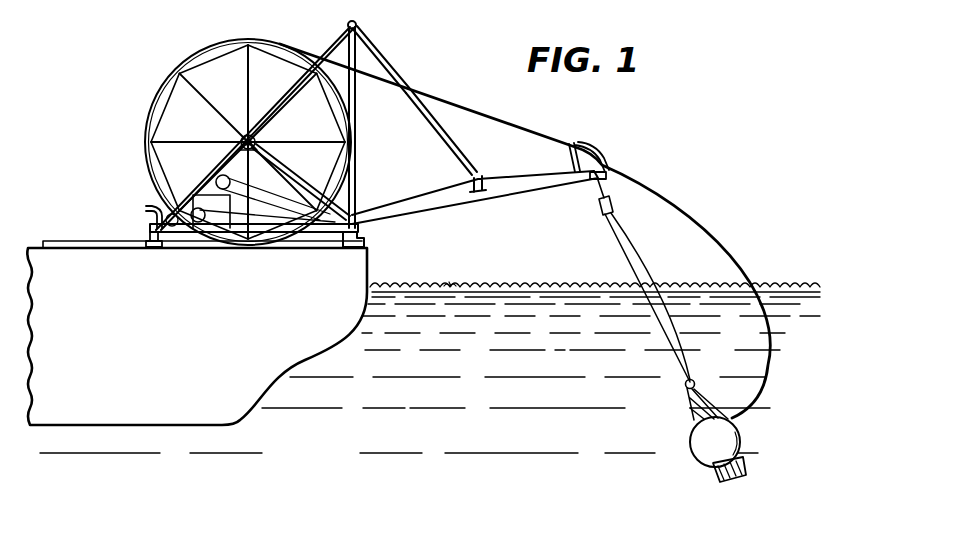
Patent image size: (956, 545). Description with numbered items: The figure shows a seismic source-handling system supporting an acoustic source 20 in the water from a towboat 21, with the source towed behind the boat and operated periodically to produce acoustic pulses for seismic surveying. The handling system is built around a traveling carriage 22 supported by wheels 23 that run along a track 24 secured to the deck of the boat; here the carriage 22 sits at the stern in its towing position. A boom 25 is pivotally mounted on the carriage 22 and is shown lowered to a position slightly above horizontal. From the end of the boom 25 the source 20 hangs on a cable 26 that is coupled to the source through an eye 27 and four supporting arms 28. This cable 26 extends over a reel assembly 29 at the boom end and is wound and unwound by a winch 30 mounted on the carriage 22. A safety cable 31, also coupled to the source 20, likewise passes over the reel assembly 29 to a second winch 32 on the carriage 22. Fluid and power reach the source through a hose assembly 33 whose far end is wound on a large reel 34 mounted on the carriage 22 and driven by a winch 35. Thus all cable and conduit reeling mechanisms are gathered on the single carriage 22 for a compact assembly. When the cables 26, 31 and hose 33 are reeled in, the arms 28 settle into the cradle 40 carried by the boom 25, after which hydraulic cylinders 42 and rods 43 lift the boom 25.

The acoustic source 20 is at (690, 441).
The towboat 21 is at (166, 389).
The traveling carriage 22 is at (152, 228).
The wheels 23 is at (152, 249).
The track 24 is at (86, 242).
The boom 25 is at (526, 195).
The cable 26 is at (630, 252).
The eye 27 is at (697, 384).
The supporting arms 28 is at (686, 405).
The reel assembly 29 is at (597, 183).
The winch 30 is at (200, 240).
The safety cable 31 is at (640, 256).
The second winch 32 is at (222, 175).
The hose assembly 33 is at (476, 114).
The large reel 34 is at (232, 50).
The winch 35 is at (163, 213).
The cradle 40 is at (613, 205).
The hydraulic cylinders 42 is at (389, 72).
The rods 43 is at (444, 147).